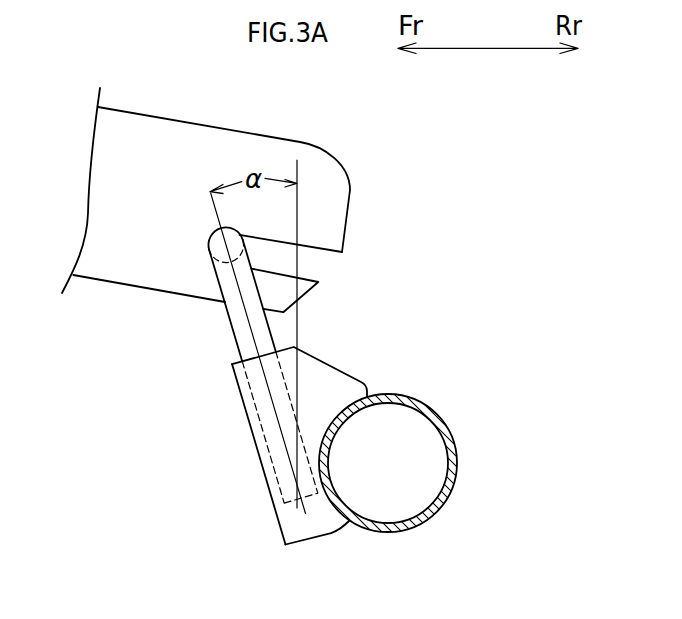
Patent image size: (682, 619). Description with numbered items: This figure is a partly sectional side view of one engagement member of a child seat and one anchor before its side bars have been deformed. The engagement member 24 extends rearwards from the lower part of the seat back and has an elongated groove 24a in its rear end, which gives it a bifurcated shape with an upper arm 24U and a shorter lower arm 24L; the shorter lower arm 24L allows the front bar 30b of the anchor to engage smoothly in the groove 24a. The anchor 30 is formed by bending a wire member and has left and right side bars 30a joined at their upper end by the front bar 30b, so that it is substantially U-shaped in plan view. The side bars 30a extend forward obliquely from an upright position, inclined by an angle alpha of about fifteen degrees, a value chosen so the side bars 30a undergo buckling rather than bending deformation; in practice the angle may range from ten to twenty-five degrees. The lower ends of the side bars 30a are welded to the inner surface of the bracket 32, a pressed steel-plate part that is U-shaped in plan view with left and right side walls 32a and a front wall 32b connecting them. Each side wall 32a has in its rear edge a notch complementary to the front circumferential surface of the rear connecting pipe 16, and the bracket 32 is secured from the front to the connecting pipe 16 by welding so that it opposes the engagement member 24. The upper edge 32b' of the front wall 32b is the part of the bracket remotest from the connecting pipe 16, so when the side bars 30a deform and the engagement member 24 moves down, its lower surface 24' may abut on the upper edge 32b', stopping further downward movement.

The engagement member 24 is at (206, 164).
The lower surface of the engagement member 24' is at (127, 318).
The upper arm 24U is at (318, 225).
The groove 24a is at (320, 268).
The lower arm 24L is at (290, 299).
The anchor 30 is at (154, 358).
The side bar 30a is at (240, 322).
The front bar 30b is at (208, 247).
The bracket 32 is at (324, 461).
The side wall 32a is at (321, 518).
The front wall 32b is at (270, 477).
The upper edge of the front wall 32b' is at (221, 467).
The rear connecting pipe 16 is at (427, 478).